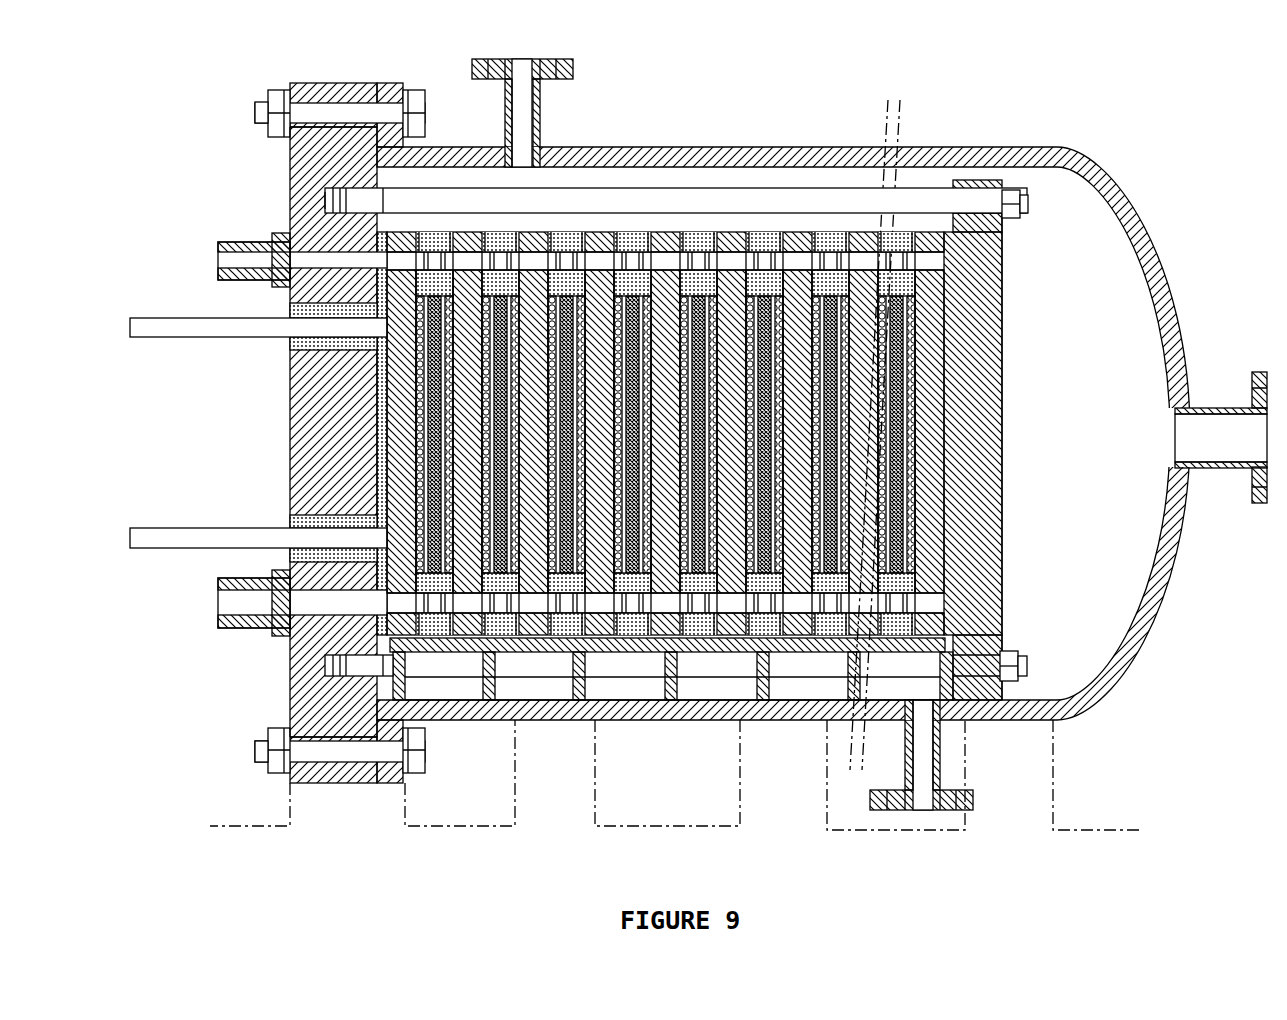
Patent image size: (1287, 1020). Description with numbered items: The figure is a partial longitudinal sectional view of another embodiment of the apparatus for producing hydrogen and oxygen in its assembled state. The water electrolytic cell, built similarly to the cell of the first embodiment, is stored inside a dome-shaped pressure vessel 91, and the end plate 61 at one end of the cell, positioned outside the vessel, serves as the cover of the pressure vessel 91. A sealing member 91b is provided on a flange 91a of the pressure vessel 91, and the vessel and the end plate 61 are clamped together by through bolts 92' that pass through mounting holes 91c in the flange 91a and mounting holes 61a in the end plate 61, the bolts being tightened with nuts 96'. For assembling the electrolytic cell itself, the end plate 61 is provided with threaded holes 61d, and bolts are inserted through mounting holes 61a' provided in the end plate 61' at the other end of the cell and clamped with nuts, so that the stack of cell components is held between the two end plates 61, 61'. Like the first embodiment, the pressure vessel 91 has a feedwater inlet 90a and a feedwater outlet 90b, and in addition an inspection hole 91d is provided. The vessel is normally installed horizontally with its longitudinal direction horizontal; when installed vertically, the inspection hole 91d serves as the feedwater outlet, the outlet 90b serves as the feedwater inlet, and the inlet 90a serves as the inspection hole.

The end plate 61 is at (258, 432).
The end plate 61' is at (1032, 456).
The mounting holes 61a is at (333, 397).
The mounting holes 61a' is at (1046, 243).
The threaded holes 61d is at (340, 229).
The feedwater inlet 90a is at (937, 752).
The feedwater outlet 90b is at (537, 112).
The pressure vessel 91 is at (1128, 190).
The flange 91a is at (290, 155).
The sealing member 91b is at (290, 176).
The mounting holes 91c is at (393, 92).
The inspection hole 91d is at (1220, 406).
The through bolts 92' is at (367, 392).
The nuts 96' is at (252, 392).